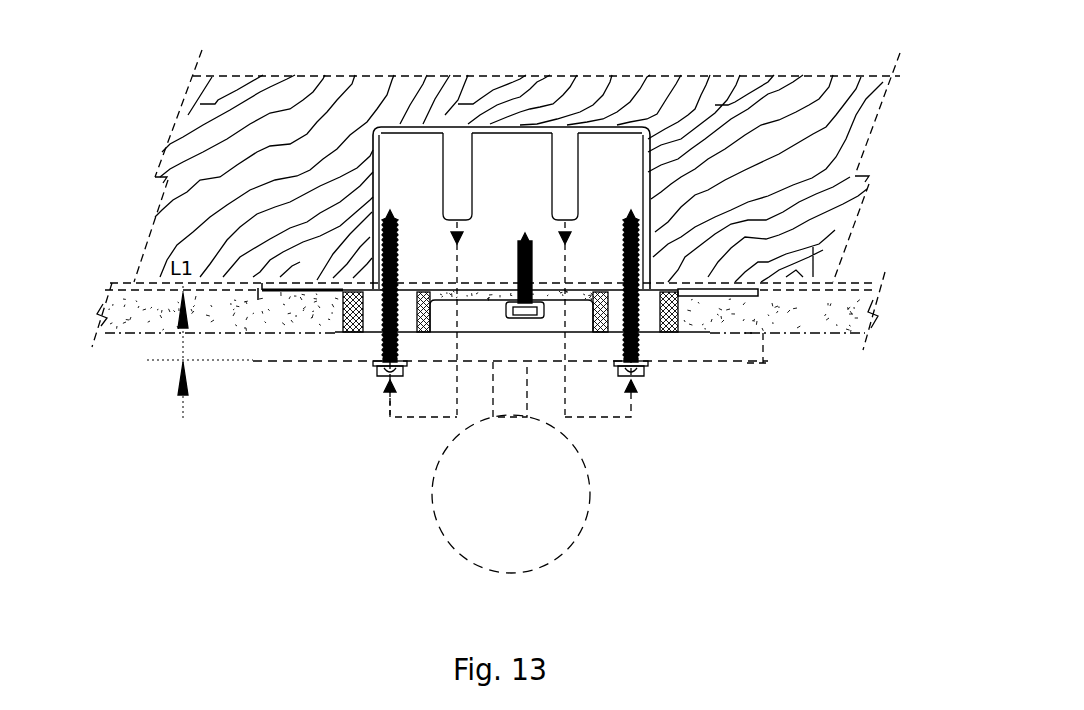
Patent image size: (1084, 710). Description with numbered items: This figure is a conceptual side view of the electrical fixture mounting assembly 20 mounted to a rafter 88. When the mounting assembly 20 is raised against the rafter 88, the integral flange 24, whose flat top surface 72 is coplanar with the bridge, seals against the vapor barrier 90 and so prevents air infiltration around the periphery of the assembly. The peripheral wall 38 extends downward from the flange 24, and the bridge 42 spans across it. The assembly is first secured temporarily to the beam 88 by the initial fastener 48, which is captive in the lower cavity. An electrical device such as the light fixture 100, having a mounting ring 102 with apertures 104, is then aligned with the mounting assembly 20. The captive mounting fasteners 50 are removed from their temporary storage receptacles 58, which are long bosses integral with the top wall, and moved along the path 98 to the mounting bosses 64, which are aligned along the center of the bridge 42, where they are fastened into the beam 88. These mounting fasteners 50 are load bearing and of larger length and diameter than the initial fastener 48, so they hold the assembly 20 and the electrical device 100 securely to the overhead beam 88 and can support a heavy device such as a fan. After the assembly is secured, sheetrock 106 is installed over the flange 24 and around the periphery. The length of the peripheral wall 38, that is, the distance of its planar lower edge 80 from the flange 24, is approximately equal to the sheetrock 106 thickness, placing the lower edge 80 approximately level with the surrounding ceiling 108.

The electrical fixture mounting assembly 20 is at (648, 134).
The integral flange 24 is at (713, 286).
The peripheral wall 38 is at (491, 327).
The bridge 42 is at (466, 296).
The initial fastener 48 is at (525, 315).
The captive mounting fasteners 50 is at (647, 341).
The temporary storage receptacles 58 is at (578, 168).
The mounting bosses 64 is at (682, 314).
The top surface 72 is at (307, 283).
The planar lower edge 80 is at (445, 333).
The rafter 88 is at (841, 95).
The vapor barrier 90 is at (853, 290).
The path 98 is at (427, 418).
The light fixture 100 is at (585, 522).
The mounting ring 102 is at (713, 363).
The apertures 104 is at (601, 389).
The sheetrock 106 is at (850, 325).
The ceiling 108 is at (788, 337).